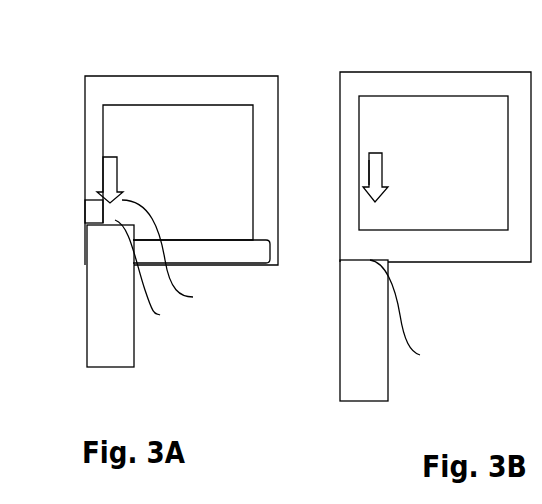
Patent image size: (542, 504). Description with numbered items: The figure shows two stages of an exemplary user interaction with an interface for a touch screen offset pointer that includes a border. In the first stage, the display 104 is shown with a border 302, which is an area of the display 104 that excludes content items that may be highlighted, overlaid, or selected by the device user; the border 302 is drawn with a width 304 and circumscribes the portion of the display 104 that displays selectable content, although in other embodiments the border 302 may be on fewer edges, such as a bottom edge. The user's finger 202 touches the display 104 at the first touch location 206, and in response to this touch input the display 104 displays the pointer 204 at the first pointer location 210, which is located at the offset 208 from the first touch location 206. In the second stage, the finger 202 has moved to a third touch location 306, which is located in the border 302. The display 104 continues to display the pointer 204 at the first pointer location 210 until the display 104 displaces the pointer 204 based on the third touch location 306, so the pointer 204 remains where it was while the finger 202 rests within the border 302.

In FIG. 3A, the display 104 is at (228, 75).
In FIG. 3B, the display 104 is at (483, 72).
In FIG. 3A, the border 302 is at (182, 90).
In FIG. 3B, the border 302 is at (437, 85).
In FIG. 3A, the pointer 204 is at (105, 157).
In FIG. 3B, the pointer 204 is at (372, 155).
In FIG. 3A, the offset 208 is at (85, 212).
In FIG. 3A, the finger 202 is at (118, 360).
In FIG. 3B, the finger 202 is at (382, 402).
In FIG. 3A, the width of the border 304 is at (272, 250).
In FIG. 3A, the first pointer location 210 is at (178, 254).
In FIG. 3B, the first pointer location 210 is at (377, 200).
In FIG. 3A, the first touch location 206 is at (153, 282).
In FIG. 3B, the third touch location 306 is at (420, 314).